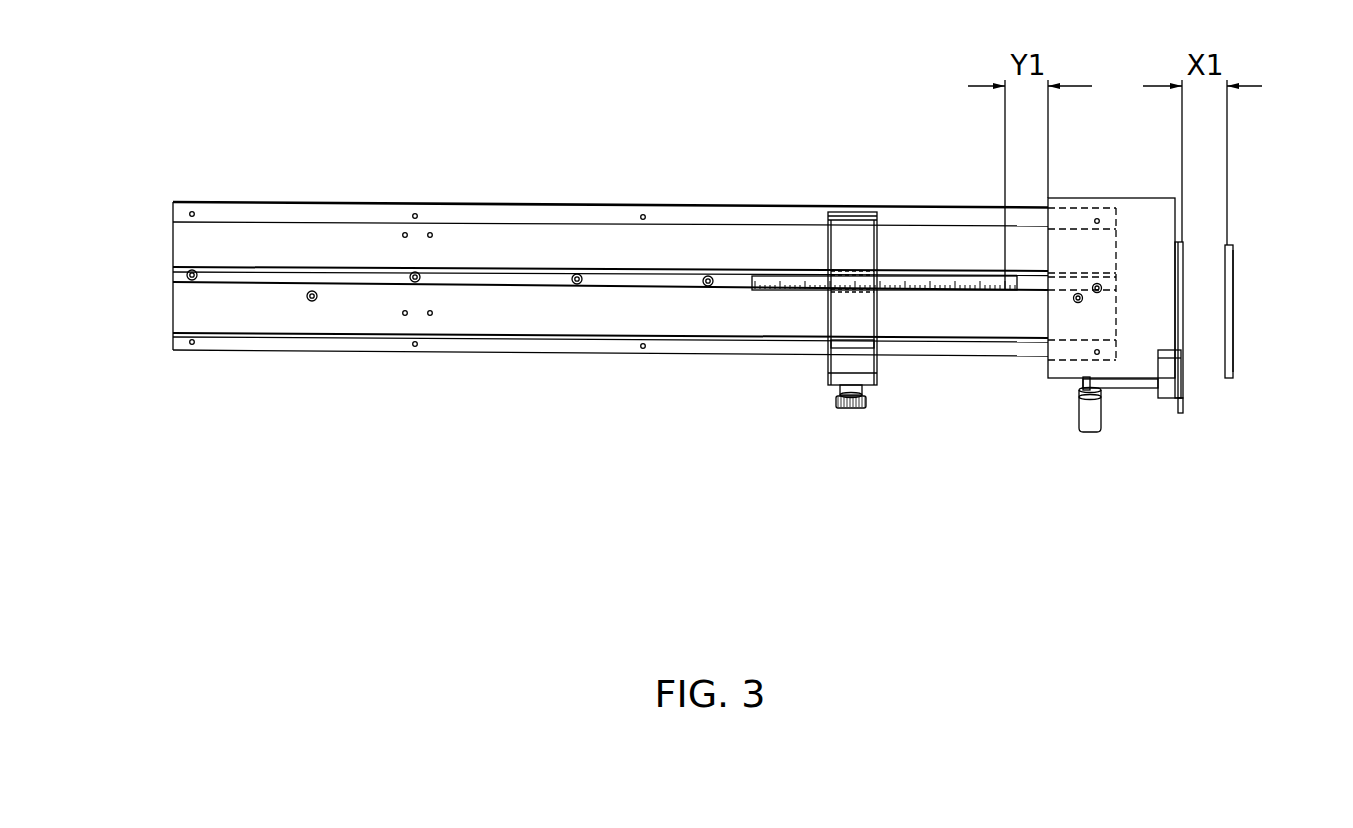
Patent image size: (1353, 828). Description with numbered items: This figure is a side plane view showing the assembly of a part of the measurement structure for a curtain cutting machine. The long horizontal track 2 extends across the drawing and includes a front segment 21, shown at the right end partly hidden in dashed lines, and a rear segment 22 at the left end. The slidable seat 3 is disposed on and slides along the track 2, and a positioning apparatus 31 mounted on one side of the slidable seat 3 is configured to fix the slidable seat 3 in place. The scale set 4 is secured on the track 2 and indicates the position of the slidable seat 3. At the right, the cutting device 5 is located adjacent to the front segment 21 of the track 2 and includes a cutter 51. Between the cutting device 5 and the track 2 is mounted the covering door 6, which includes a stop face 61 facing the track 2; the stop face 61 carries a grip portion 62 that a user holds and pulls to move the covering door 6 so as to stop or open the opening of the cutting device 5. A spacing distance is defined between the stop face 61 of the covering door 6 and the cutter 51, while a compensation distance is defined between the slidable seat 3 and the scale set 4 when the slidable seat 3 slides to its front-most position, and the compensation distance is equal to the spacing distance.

The track 2 is at (362, 192).
The front segment 21 is at (1116, 320).
The rear segment 22 is at (173, 302).
The slidable seat 3 is at (1040, 389).
The positioning apparatus 31 is at (851, 410).
The scale set 4 is at (773, 266).
The cutting device 5 is at (1246, 295).
The cutter 51 is at (1233, 300).
The covering door 6 is at (1155, 421).
The stop face 61 is at (1178, 330).
The grip portion 62 is at (1170, 378).